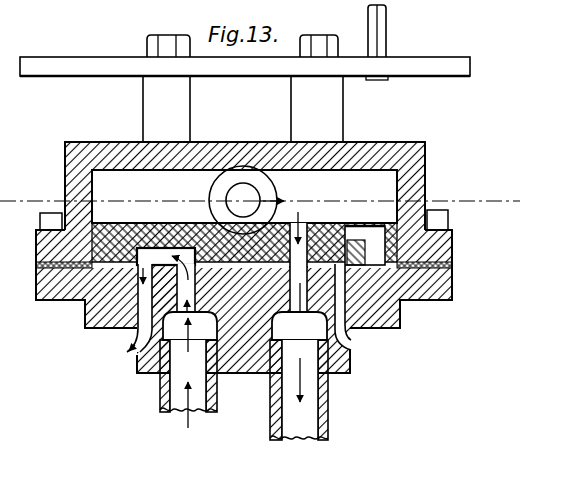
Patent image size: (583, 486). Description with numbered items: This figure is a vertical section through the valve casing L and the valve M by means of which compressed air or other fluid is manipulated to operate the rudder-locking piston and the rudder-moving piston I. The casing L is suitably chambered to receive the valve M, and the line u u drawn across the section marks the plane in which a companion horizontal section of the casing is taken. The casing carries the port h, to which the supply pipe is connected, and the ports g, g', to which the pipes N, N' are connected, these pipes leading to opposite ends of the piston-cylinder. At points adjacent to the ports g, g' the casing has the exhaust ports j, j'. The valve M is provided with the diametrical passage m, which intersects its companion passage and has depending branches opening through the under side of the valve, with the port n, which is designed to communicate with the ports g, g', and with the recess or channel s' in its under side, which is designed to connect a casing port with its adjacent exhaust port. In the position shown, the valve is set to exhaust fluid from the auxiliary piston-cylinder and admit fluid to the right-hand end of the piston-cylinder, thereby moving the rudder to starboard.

The rudder-moving piston I is at (378, 48).
The port h is at (238, 192).
The recess or channel s' is at (161, 264).
The valve M is at (283, 204).
The port n is at (300, 253).
The diametrical passage m is at (363, 227).
The valve casing L is at (244, 202).
The section line u is at (260, 201).
The exhaust port j is at (240, 317).
The port g' is at (196, 288).
The port g is at (381, 300).
The exhaust port j' is at (361, 309).
The pipe N' is at (167, 370).
The pipe N is at (314, 376).